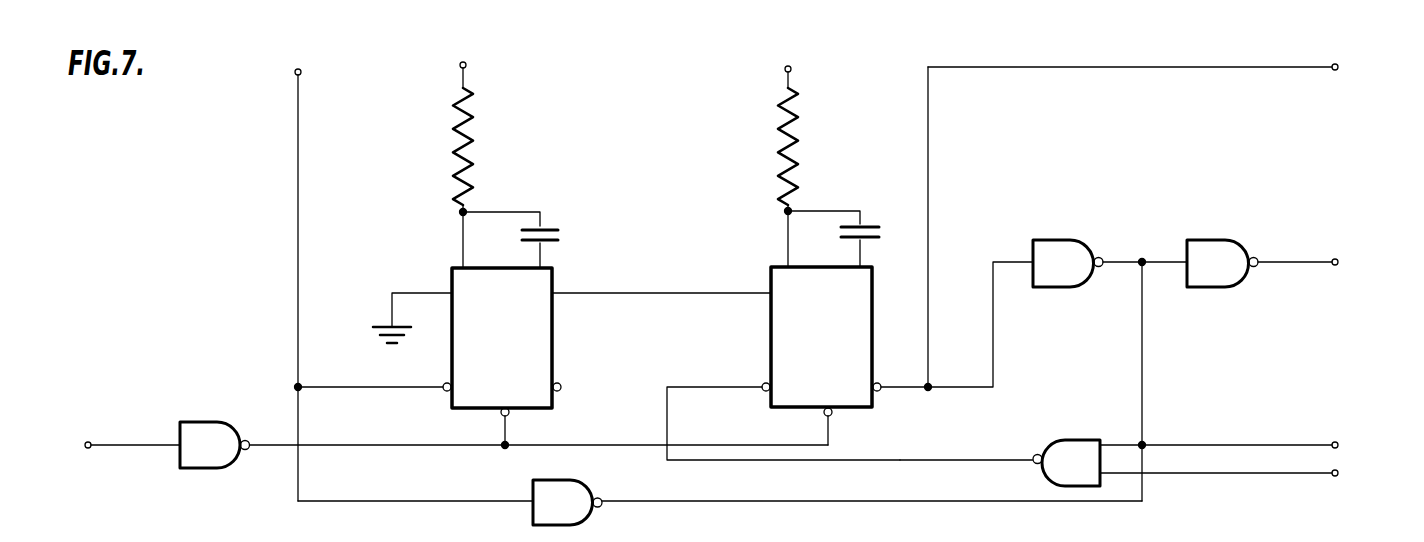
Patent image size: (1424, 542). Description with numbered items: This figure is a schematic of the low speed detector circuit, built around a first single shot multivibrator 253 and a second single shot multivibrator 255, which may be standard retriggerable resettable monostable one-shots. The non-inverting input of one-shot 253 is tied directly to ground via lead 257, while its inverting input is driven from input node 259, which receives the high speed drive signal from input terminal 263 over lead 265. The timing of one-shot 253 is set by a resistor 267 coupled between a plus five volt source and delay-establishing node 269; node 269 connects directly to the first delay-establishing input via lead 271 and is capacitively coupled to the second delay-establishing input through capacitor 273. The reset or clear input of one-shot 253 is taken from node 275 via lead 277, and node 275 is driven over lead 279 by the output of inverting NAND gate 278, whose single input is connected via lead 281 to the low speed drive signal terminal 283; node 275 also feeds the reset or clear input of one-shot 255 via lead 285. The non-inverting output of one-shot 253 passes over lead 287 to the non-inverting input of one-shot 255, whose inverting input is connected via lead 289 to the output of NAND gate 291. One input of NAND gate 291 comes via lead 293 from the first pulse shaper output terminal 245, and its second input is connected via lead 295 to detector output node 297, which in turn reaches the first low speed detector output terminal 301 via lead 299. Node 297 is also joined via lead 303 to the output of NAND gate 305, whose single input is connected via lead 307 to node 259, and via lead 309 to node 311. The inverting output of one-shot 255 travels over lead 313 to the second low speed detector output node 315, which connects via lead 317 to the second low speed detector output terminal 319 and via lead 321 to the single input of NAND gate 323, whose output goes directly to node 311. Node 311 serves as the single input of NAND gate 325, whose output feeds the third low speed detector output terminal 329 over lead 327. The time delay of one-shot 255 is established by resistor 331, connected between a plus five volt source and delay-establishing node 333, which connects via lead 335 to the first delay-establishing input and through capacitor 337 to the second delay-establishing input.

The high speed drive signal input terminal 263 is at (301, 72).
The lead 265 is at (297, 148).
The resistor 267 is at (462, 134).
The delay-establishing input node 269 is at (465, 211).
The lead 271 is at (462, 247).
The capacitor 273 is at (559, 235).
The lead 257 is at (392, 293).
The first single shot multivibrator 253 is at (518, 355).
The lead 287 is at (612, 293).
The input node 259 is at (296, 386).
The low speed drive signal terminal 283 is at (90, 412).
The lead 281 is at (156, 445).
The inverting NAND gate 278 is at (242, 393).
The lead 279 is at (330, 410).
The lead 277 is at (508, 432).
The node 275 is at (505, 447).
The lead 307 is at (300, 490).
The NAND gate 305 is at (593, 470).
The lead 289 is at (772, 461).
The NAND gate 291 is at (1043, 480).
The lead 303 is at (868, 500).
The lead 285 is at (829, 428).
The second single shot multivibrator 255 is at (836, 357).
The resistor 331 is at (787, 137).
The delay-establishing node 333 is at (790, 210).
The lead 335 is at (787, 247).
The capacitor 337 is at (912, 198).
The lead 317 is at (929, 295).
The lead 321 is at (993, 368).
The lead 313 is at (905, 389).
The second low speed detector output node 315 is at (930, 389).
The second low speed detector output terminal 319 is at (1338, 67).
The NAND gate 323 is at (1040, 288).
The node 311 is at (1142, 265).
The NAND gate 325 is at (1193, 288).
The lead 327 is at (1302, 263).
The third low speed detector output terminal 329 is at (1346, 264).
The lead 309 is at (1142, 360).
The detector output node 297 is at (1143, 443).
The lead 295 is at (1116, 444).
The lead 299 is at (1181, 445).
The first low speed detector output terminal 301 is at (1336, 444).
The lead 293 is at (1282, 475).
The first pulse shaper output terminal 245 is at (1336, 476).